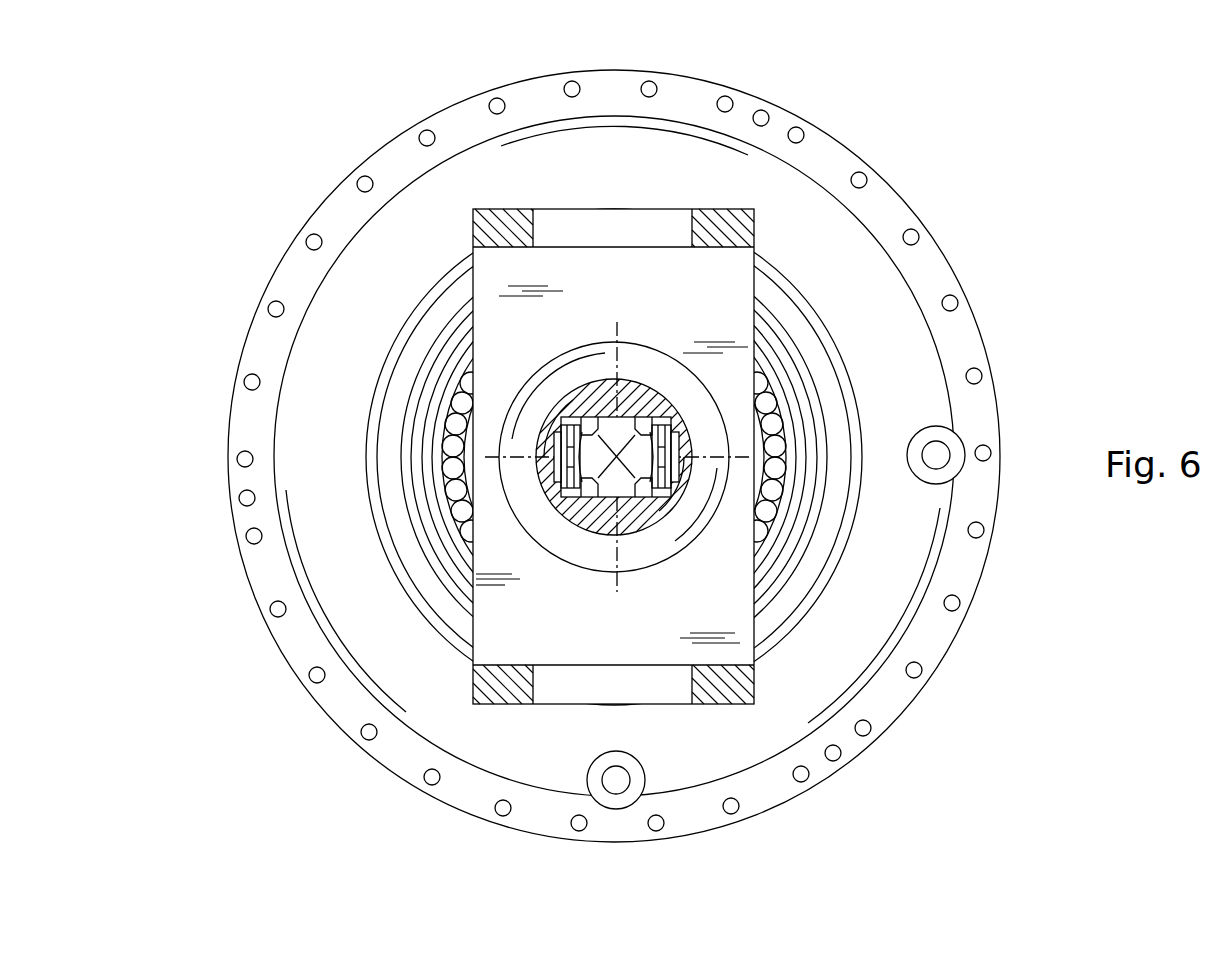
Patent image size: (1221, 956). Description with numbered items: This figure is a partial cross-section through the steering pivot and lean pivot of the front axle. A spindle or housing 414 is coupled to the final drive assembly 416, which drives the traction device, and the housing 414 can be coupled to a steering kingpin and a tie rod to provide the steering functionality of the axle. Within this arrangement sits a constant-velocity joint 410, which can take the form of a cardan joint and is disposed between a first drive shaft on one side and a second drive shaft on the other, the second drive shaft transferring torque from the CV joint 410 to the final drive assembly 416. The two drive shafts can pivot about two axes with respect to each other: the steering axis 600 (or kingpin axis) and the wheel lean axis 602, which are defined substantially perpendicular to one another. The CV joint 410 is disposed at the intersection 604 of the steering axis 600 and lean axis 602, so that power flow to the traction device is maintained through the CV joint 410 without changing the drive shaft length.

The final drive assembly 416 is at (266, 262).
The housing 414 is at (498, 215).
The steering axis 600 is at (617, 330).
The wheel lean axis 602 is at (710, 455).
The intersection 604 is at (618, 464).
The constant-velocity joint 410 is at (588, 534).